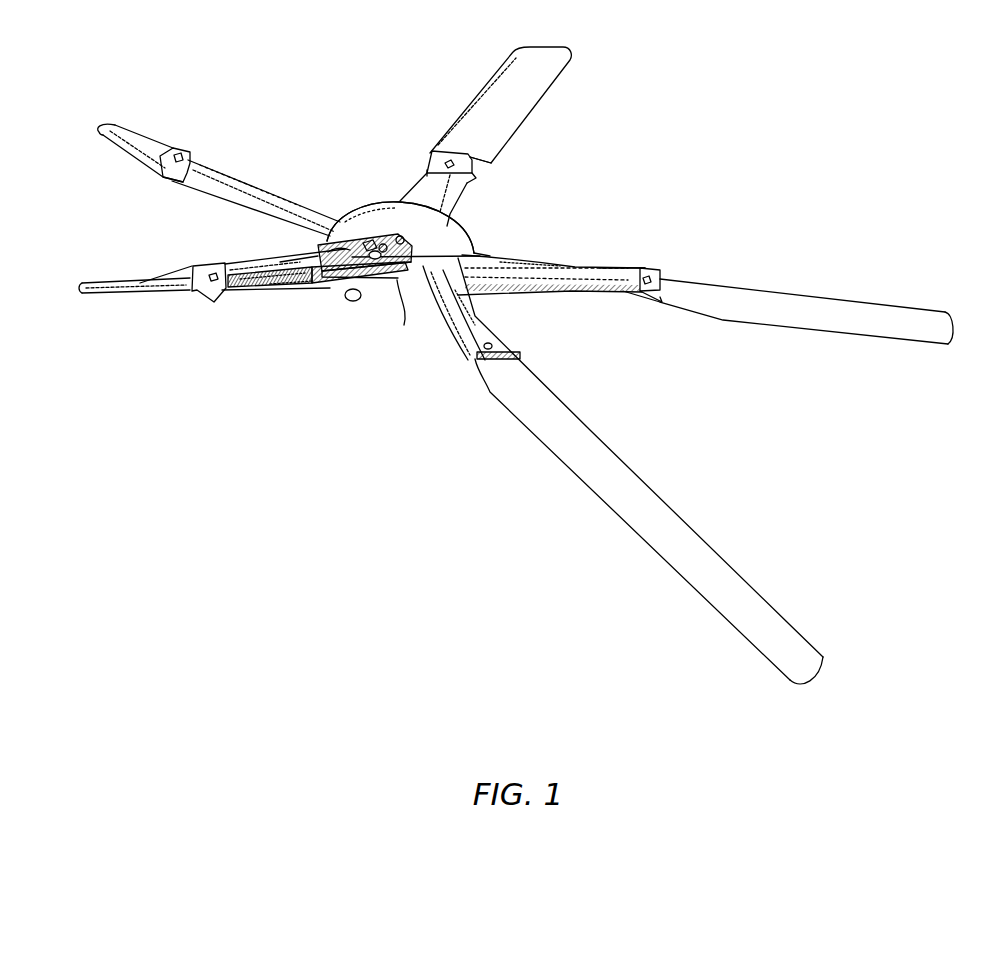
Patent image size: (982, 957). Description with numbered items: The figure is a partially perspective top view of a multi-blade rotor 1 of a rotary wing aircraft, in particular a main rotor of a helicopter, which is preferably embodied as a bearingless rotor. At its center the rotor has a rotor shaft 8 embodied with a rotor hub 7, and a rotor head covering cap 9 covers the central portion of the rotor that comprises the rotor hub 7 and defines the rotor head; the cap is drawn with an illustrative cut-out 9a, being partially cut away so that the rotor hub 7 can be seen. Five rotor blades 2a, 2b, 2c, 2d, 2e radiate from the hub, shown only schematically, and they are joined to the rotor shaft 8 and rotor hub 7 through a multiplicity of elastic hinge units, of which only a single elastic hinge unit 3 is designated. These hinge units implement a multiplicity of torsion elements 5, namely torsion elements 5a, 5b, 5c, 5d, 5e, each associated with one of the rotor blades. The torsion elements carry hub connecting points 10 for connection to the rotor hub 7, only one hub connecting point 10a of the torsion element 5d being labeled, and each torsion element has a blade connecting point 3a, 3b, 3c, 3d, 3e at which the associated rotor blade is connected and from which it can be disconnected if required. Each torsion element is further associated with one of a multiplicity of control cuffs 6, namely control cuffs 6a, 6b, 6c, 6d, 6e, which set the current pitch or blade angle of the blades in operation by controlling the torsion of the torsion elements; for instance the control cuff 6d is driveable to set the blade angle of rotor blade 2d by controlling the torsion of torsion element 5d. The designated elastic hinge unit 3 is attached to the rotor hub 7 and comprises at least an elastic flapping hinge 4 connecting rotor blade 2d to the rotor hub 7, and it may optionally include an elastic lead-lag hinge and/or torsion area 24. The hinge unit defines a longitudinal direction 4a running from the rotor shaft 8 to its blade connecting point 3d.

The multi-blade rotor 1 is at (362, 72).
The rotor blade 2a is at (578, 64).
The rotor blade 2b is at (910, 312).
The rotor blade 2c is at (788, 623).
The rotor blade 2d is at (95, 281).
The rotor blade 2e is at (106, 140).
The elastic hinge unit 3 is at (288, 290).
The blade connecting point 3a is at (460, 150).
The blade connecting point 3b is at (670, 286).
The blade connecting point 3c is at (502, 364).
The blade connecting point 3d is at (195, 283).
The blade connecting point 3e is at (197, 168).
The elastic flapping hinge 4 is at (370, 280).
The longitudinal direction 4a is at (352, 259).
The torsion elements 5 is at (648, 254).
The torsion element 5a is at (457, 205).
The torsion element 5b is at (577, 300).
The torsion element 5c is at (451, 341).
The torsion element 5d is at (217, 261).
The torsion element 5e is at (243, 179).
The control cuffs 6 is at (472, 188).
The control cuff 6a is at (422, 173).
The control cuff 6b is at (578, 266).
The control cuff 6c is at (480, 332).
The control cuff 6d is at (340, 262).
The control cuff 6e is at (260, 193).
The rotor hub 7 is at (483, 253).
The rotor shaft 8 is at (410, 257).
The rotor head covering cap 9 is at (462, 228).
The cut-out 9a is at (338, 268).
The hub connecting points 10 is at (368, 239).
The hub connecting point 10a is at (383, 244).
The elastic lead-lag hinge and/or torsion area 24 is at (253, 290).